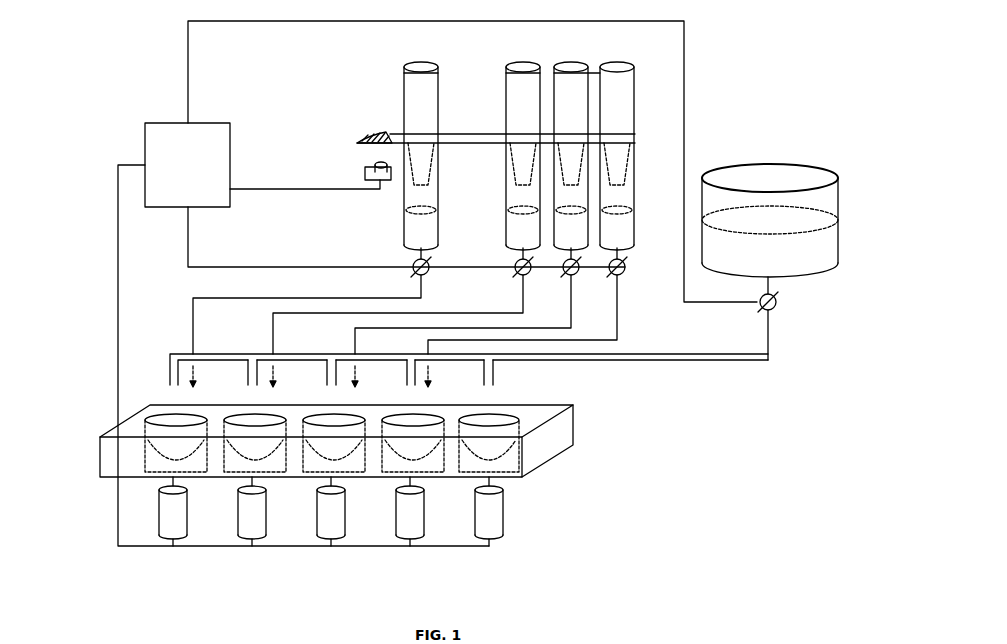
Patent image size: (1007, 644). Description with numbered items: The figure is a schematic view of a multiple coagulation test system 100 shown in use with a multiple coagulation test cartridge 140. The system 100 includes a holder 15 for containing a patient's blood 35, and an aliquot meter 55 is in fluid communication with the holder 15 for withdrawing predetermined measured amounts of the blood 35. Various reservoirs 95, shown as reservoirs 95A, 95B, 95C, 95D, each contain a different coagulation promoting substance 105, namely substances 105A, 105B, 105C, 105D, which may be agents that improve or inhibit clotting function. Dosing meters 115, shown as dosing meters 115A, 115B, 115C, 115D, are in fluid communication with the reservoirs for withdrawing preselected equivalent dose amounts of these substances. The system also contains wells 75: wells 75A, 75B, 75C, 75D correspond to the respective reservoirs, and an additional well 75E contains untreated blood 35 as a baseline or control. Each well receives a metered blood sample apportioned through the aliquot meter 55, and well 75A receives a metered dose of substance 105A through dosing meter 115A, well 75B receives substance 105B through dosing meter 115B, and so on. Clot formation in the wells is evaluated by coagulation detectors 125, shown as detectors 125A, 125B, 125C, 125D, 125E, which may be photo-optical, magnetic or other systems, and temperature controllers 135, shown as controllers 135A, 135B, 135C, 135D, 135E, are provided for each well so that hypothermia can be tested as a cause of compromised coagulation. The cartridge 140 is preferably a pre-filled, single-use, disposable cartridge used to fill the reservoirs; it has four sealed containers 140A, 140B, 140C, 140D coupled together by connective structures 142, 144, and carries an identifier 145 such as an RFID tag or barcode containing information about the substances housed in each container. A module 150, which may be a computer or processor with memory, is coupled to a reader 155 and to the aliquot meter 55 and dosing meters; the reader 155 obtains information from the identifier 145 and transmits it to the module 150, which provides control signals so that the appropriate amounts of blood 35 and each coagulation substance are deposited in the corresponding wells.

The holder 15 is at (830, 194).
The blood 35 is at (828, 253).
The aliquot meter 55 is at (760, 308).
The wells 75 is at (582, 450).
The well 75A is at (164, 462).
The well 75B is at (243, 462).
The well 75C is at (322, 462).
The well 75D is at (401, 462).
The additional well 75E is at (477, 462).
The reservoirs 95 is at (637, 181).
The reservoir 95A is at (408, 204).
The reservoir 95B is at (510, 200).
The reservoir 95C is at (632, 204).
The reservoir 95D is at (637, 188).
The multiple coagulation test system 100 is at (583, 470).
The coagulation promoting substance 105 is at (640, 246).
The coagulation promoting substance 105A is at (421, 220).
The coagulation promoting substance 105B is at (523, 220).
The coagulation promoting substance 105C is at (571, 220).
The coagulation promoting substance 105D is at (617, 220).
The dosing meters 115 is at (626, 280).
The dosing meter 115A is at (411, 262).
The dosing meter 115B is at (516, 276).
The dosing meter 115C is at (564, 276).
The dosing meter 115D is at (610, 276).
The coagulation detectors 125 is at (514, 543).
The coagulation detector 125A is at (187, 520).
The coagulation detector 125B is at (266, 520).
The coagulation detector 125C is at (345, 520).
The coagulation detector 125D is at (424, 520).
The coagulation detector 125E is at (503, 520).
The temperature controllers 135 is at (103, 481).
The temperature controller 135A is at (183, 481).
The temperature controller 135B is at (262, 481).
The temperature controller 135C is at (341, 481).
The temperature controller 135D is at (420, 481).
The temperature controller 135E is at (500, 481).
The multiple coagulation test cartridge 140 is at (496, 56).
The container 140A is at (421, 156).
The container 140B is at (523, 156).
The container 140C is at (571, 156).
The container 140D is at (617, 156).
The connective structure 142 is at (463, 80).
The connective structure 144 is at (455, 145).
The identifier 145 is at (378, 130).
The module 150 is at (176, 173).
The reader 155 is at (356, 170).